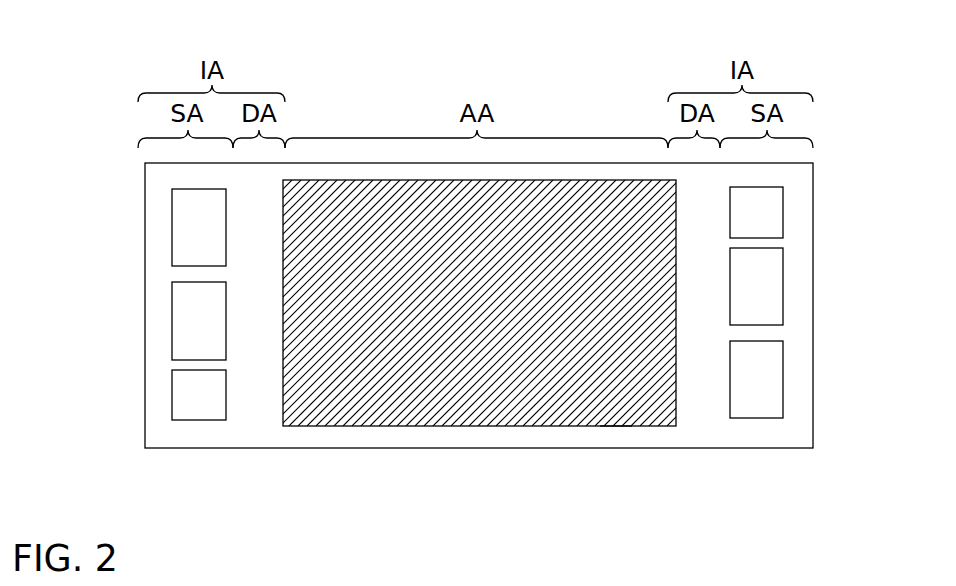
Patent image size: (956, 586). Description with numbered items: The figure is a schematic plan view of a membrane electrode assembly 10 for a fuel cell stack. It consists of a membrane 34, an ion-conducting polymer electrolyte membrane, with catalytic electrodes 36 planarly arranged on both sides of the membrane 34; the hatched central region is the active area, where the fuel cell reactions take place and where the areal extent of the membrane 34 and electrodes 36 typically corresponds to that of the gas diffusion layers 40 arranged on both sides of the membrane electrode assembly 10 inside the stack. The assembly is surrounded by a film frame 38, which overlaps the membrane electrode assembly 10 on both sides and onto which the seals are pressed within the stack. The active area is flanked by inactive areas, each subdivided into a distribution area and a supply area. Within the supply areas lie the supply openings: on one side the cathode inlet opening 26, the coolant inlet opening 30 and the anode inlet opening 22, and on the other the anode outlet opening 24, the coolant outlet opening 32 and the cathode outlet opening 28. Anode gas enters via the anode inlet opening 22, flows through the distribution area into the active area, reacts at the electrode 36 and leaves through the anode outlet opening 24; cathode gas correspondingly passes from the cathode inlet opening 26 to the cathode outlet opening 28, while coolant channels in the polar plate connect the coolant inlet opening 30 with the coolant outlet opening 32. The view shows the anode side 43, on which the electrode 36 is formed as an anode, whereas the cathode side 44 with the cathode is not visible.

The membrane electrode assembly 10 is at (577, 82).
The anode inlet opening 22 is at (172, 397).
The anode outlet opening 24 is at (783, 213).
The cathode inlet opening 26 is at (172, 222).
The cathode outlet opening 28 is at (783, 378).
The coolant inlet opening 30 is at (172, 325).
The coolant outlet opening 32 is at (783, 285).
The membrane 34 is at (475, 350).
The electrodes 36 is at (475, 350).
The film frame 38 is at (248, 427).
The gas diffusion layers 40 is at (412, 428).
The anode side 43 is at (616, 430).
The cathode side 44 is at (697, 415).